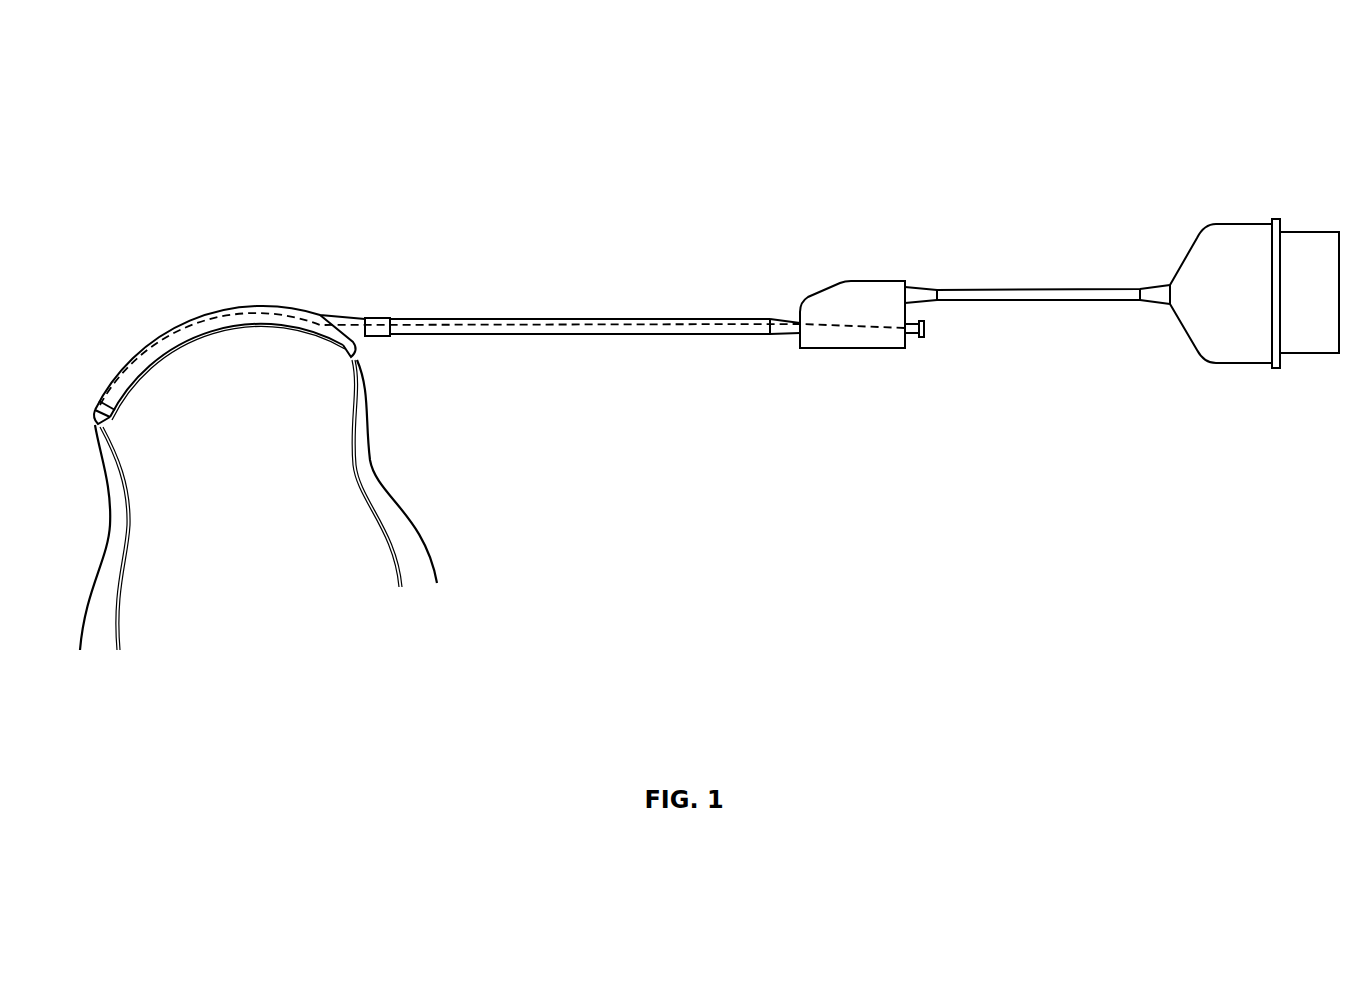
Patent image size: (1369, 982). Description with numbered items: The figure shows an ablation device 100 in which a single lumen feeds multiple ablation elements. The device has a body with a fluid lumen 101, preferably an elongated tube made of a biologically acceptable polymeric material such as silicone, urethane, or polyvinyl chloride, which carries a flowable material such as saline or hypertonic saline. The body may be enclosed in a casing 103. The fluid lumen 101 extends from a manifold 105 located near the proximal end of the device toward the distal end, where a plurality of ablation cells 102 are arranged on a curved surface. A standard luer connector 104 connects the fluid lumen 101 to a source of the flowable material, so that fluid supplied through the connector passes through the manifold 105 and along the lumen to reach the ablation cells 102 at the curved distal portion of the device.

The ablation device 100 is at (642, 136).
The fluid lumen 101 is at (642, 325).
The ablation cells 102 is at (232, 333).
The casing 103 is at (553, 335).
The luer connector 104 is at (917, 335).
The manifold 105 is at (825, 300).